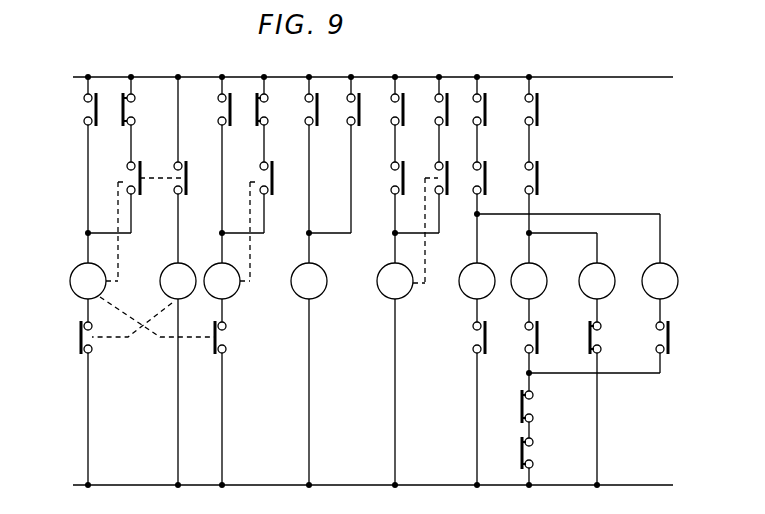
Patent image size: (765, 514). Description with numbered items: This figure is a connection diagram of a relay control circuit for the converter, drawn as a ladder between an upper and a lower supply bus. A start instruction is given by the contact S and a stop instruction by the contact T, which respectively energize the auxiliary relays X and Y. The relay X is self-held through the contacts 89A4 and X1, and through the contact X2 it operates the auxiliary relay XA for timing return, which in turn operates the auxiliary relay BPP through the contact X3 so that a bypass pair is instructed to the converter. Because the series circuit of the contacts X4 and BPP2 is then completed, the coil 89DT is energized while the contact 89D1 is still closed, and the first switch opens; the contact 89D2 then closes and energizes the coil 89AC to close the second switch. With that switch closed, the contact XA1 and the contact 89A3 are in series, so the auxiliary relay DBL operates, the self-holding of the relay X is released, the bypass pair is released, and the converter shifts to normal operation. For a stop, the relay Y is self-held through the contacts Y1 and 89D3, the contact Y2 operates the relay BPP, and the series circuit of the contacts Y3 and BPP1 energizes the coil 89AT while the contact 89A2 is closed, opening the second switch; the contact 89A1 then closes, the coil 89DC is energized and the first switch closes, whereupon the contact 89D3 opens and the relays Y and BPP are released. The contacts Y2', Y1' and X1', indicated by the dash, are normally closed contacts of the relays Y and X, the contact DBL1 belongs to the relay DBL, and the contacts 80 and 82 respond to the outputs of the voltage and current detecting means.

The contact S is at (98, 110).
The contact T is at (233, 110).
The contact 89A4 is at (135, 107).
The contact 89D3 is at (262, 112).
The contact X3 is at (317, 95).
The contact Y2 is at (363, 120).
The contact XA1 is at (400, 108).
The contact Y2' is at (431, 86).
The contact Y3 is at (490, 113).
The contact X4 is at (537, 95).
The contact X1 is at (144, 190).
The contact X2 is at (191, 190).
The contact Y1 is at (276, 190).
The contact 89A3 is at (401, 178).
The contact DBL1 is at (449, 178).
The contact BPP1 is at (485, 163).
The contact BPP2 is at (537, 163).
The auxiliary relay X is at (88, 281).
The auxiliary relay for timing return XA is at (178, 281).
The auxiliary relay Y is at (222, 281).
The auxiliary relay BPP is at (309, 281).
The auxiliary relay DBL is at (395, 281).
The coil 89DC is at (477, 281).
The coil 89DT is at (529, 281).
The coil 89AC is at (597, 281).
The coil 89AT is at (660, 281).
The contact Y1' is at (74, 354).
The contact X1' is at (208, 354).
The contact 89A1 is at (483, 328).
The contact 89D1 is at (554, 340).
The contact 89D2 is at (617, 340).
The contact 89A2 is at (685, 341).
The contact 80 is at (530, 406).
The contact 82 is at (530, 453).